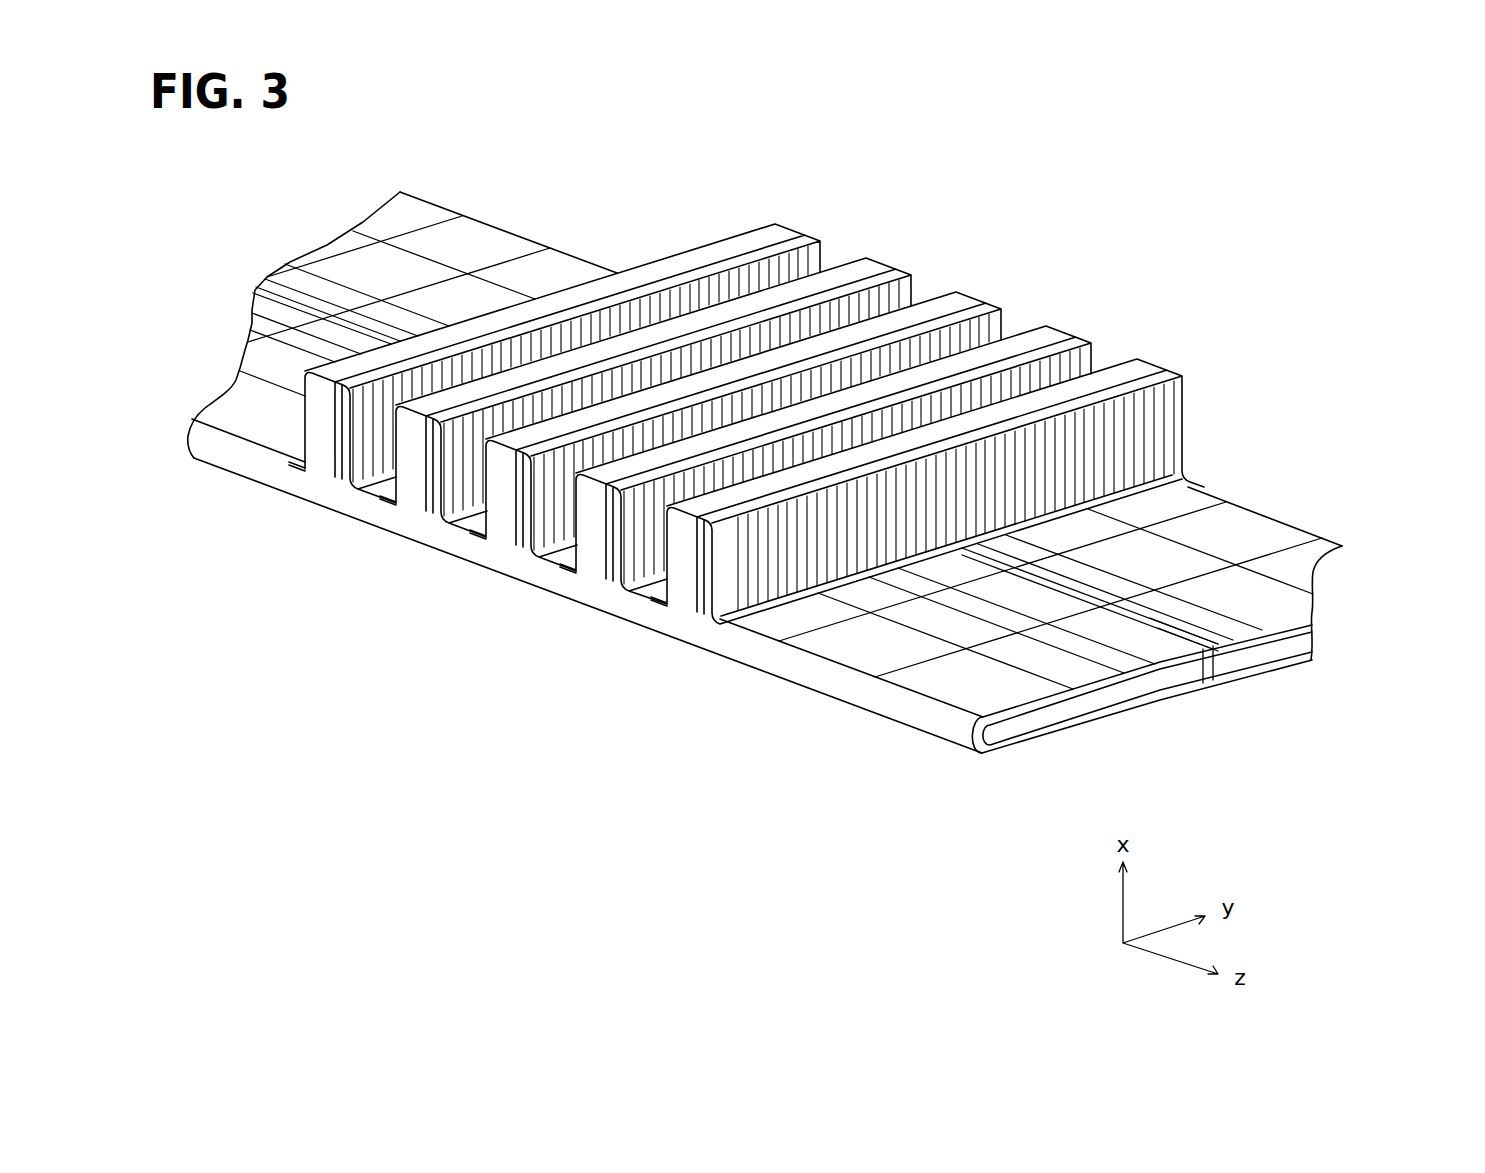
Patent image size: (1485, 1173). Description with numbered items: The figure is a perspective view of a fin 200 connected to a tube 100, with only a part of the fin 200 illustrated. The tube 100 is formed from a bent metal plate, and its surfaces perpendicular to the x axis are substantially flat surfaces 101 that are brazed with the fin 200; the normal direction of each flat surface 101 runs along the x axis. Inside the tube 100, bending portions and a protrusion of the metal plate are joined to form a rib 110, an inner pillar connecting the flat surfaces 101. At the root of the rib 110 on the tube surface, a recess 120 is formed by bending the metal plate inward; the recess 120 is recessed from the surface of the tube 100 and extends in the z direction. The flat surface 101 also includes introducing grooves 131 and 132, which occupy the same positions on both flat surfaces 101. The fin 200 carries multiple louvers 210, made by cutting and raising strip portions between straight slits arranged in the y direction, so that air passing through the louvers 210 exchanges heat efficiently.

The tube 100 is at (913, 717).
The flat surface 101 is at (1287, 587).
The rib 110 is at (1183, 663).
The recess 120 is at (1171, 624).
The introducing groove 131 is at (327, 277).
The introducing groove 132 is at (422, 223).
The fin 200 is at (1183, 403).
The louver 210 is at (770, 535).